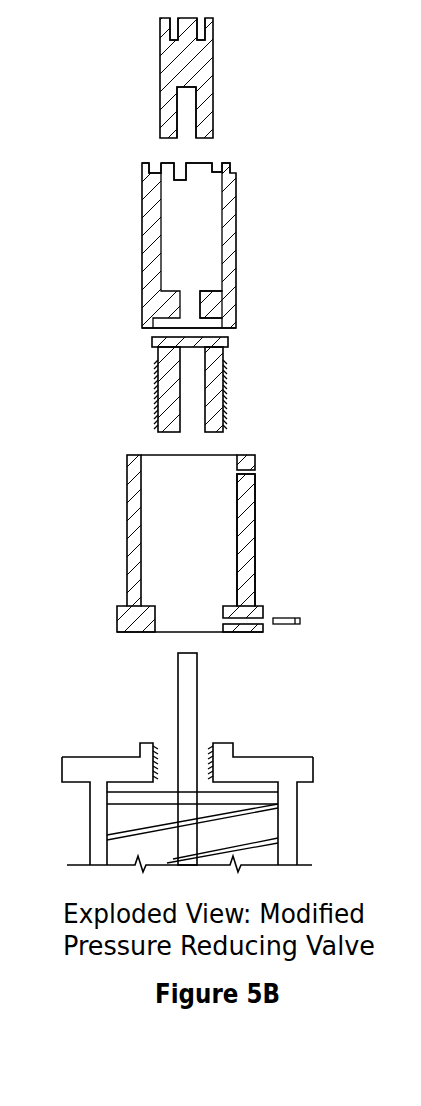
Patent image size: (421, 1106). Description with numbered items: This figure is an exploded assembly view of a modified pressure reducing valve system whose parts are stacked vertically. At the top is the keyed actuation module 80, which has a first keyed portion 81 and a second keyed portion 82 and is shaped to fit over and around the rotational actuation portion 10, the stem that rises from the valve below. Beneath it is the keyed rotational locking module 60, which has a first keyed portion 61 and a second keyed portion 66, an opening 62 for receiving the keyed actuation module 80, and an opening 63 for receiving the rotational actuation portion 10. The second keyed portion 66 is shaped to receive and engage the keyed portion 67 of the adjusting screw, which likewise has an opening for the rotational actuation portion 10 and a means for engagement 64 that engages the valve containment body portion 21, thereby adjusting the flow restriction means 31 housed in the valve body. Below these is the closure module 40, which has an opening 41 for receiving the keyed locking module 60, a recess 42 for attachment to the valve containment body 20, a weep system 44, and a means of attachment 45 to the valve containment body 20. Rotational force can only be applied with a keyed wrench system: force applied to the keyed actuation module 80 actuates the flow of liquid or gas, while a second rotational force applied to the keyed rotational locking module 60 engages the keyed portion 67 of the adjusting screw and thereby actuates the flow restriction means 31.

The rotational actuation portion 10 is at (187, 682).
The valve containment body 20 is at (298, 767).
The valve containment body portion 21 is at (152, 765).
The flow restriction means 31 is at (123, 798).
The closure module 40 is at (248, 533).
The opening 41 is at (227, 506).
The recess 42 is at (175, 618).
The weep system 44 is at (253, 473).
The means of attachment 45 is at (300, 620).
The keyed rotational locking module 60 is at (236, 220).
The first keyed portion 61 is at (150, 174).
The opening 62 is at (212, 184).
The opening 63 is at (200, 308).
The means for engagement 64 is at (223, 410).
The second keyed portion 66 is at (220, 324).
The keyed portion 67 is at (228, 342).
The keyed actuation module 80 is at (210, 67).
The first keyed portion 81 is at (203, 33).
The second keyed portion 82 is at (188, 117).